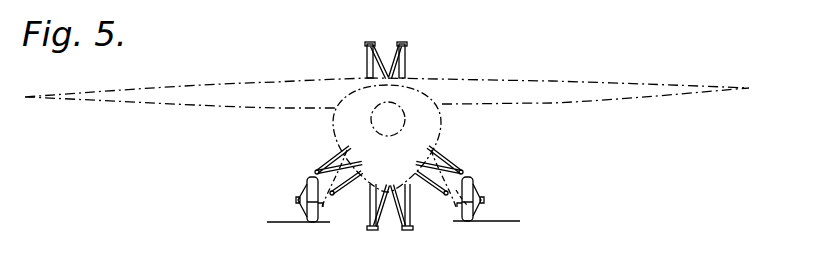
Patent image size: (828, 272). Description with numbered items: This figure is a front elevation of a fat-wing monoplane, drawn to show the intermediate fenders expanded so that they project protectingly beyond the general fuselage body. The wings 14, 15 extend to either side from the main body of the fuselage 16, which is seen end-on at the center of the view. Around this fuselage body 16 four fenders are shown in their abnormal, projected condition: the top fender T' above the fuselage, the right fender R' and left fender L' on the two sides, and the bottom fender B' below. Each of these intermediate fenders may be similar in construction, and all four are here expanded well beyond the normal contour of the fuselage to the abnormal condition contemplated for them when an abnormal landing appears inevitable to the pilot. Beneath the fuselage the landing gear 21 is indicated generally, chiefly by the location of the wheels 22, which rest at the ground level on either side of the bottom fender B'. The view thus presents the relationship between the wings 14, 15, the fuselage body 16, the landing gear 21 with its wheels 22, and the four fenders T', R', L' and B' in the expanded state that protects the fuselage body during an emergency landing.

The wing 14 is at (238, 93).
The wing 15 is at (572, 83).
The main body of the fuselage 16 is at (428, 120).
The top fender T' is at (397, 48).
The right fender R' is at (314, 172).
The left fender L' is at (460, 176).
The wheels 22 is at (312, 222).
The bottom fender B' is at (390, 226).
The landing gear 21 is at (455, 190).